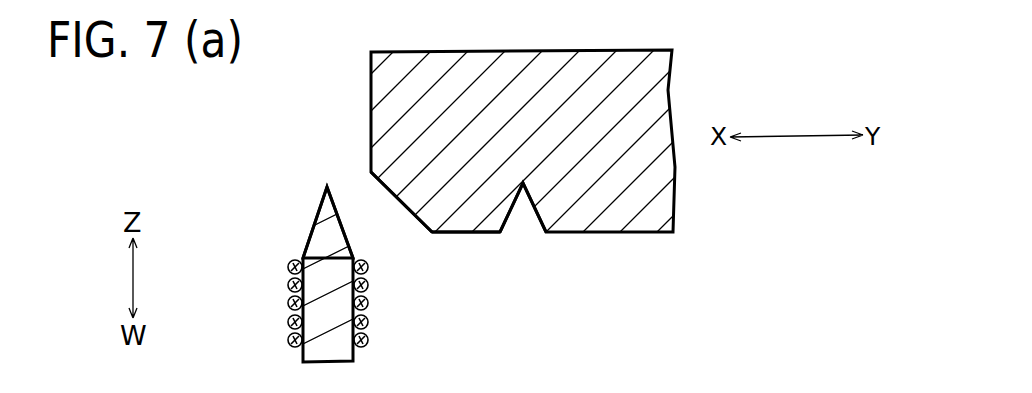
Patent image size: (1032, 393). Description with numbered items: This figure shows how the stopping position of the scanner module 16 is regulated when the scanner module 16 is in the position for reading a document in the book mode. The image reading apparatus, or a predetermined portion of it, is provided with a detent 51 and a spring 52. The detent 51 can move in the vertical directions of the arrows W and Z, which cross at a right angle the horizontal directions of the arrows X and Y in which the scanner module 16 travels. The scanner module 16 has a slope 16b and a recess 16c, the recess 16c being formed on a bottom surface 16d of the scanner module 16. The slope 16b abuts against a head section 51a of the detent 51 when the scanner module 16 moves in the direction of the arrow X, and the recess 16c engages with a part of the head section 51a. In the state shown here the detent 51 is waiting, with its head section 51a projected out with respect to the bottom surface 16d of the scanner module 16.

The scanner module 16 is at (606, 52).
The slope 16b is at (384, 192).
The recess 16c is at (546, 230).
The bottom surface 16d is at (470, 233).
The detent 51 is at (268, 327).
The head section 51a is at (310, 247).
The spring 52 is at (367, 303).